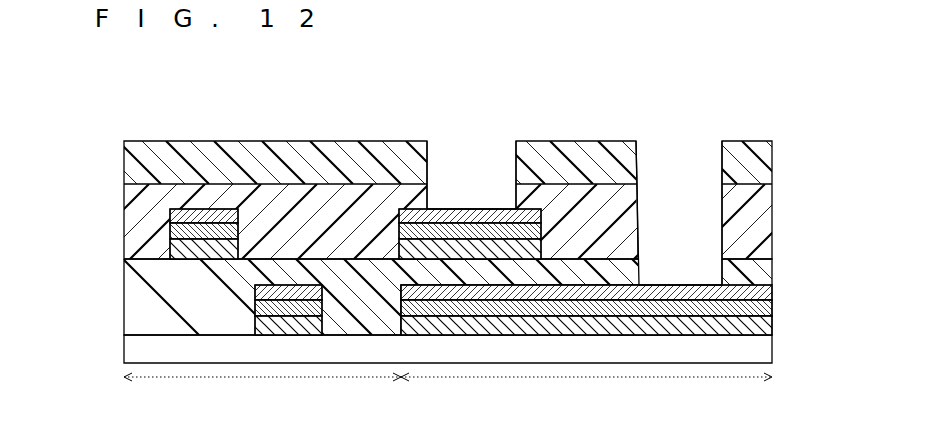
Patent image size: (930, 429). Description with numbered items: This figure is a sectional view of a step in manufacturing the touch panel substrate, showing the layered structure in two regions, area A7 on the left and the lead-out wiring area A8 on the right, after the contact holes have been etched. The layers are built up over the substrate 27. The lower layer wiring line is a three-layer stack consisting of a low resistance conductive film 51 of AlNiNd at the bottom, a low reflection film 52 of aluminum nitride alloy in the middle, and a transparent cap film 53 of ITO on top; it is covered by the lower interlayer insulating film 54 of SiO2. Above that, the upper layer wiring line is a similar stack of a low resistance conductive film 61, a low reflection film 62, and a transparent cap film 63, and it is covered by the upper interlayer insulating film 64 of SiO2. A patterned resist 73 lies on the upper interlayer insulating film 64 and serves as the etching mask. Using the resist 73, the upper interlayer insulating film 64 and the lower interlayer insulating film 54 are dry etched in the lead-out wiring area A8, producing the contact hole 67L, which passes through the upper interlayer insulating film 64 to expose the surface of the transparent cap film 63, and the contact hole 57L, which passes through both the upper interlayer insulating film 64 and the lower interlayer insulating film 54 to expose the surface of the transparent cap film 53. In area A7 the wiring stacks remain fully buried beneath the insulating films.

The resist 73 is at (128, 163).
The upper interlayer insulating film 64 is at (133, 222).
The lower interlayer insulating film 54 is at (133, 303).
The substrate 27 is at (760, 352).
The transparent cap film 63 is at (226, 209).
The low reflection film 62 is at (189, 226).
The low resistance conductive film 61 is at (177, 250).
The transparent cap film 53 is at (293, 285).
The low reflection film 52 is at (772, 307).
The low resistance conductive film 51 is at (762, 325).
The contact hole 67L is at (456, 195).
The contact hole 57L is at (677, 195).
The region A7 is at (262, 390).
The lead-out wiring area A8 is at (586, 390).